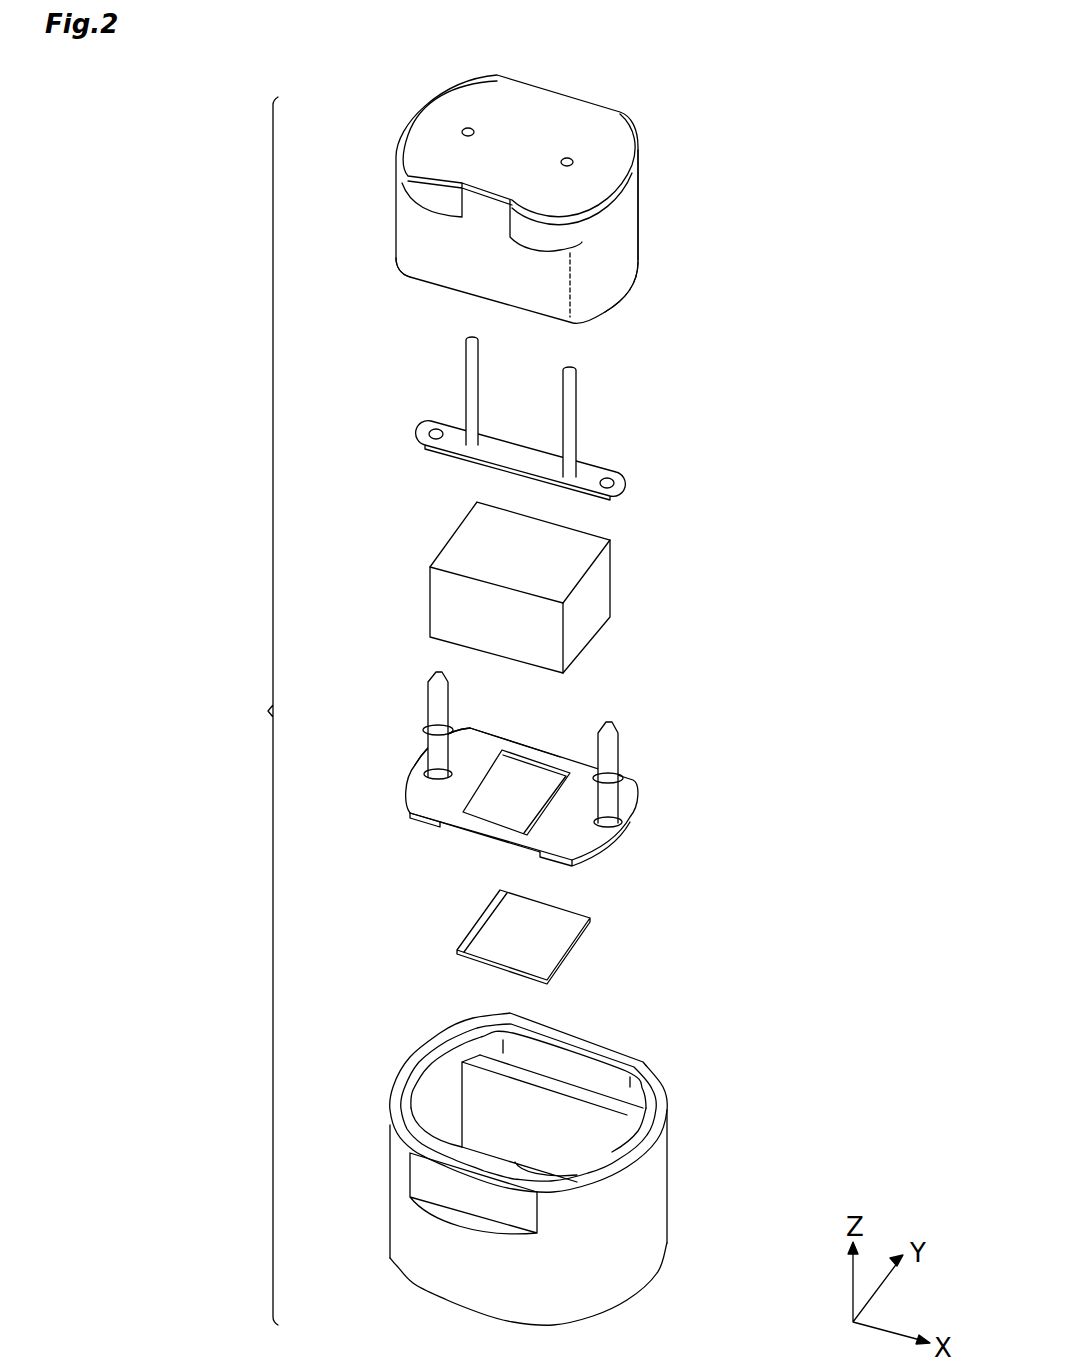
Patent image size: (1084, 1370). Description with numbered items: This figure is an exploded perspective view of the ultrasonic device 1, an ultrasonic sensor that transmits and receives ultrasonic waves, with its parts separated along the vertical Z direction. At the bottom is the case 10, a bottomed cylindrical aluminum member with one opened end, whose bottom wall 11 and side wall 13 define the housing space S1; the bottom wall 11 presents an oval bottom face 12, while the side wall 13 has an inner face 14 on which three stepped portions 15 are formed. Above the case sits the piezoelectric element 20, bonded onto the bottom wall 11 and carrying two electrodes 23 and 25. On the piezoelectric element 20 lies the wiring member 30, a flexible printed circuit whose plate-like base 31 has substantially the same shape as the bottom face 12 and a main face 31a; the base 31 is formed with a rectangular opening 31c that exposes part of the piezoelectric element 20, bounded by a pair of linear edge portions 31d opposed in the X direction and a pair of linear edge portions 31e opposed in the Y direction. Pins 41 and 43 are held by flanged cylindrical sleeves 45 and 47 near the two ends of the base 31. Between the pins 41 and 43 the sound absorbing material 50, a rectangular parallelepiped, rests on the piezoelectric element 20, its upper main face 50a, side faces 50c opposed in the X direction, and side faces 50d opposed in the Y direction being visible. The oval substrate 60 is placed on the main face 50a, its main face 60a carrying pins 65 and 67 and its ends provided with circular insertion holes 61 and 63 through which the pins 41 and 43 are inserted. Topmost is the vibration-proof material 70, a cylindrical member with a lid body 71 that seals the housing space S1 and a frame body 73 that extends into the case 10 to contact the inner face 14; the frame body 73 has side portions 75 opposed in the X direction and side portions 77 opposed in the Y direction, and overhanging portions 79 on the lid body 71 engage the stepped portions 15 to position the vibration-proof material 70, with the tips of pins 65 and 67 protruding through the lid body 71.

The ultrasonic device 1 is at (260, 711).
The case 10 is at (546, 1148).
The bottom wall 11 is at (529, 1102).
The bottom face 12 is at (540, 1175).
The side wall 13 is at (648, 1235).
The inner face 14 is at (480, 1100).
The stepped portion 15 is at (585, 1090).
The housing space S1 is at (437, 1080).
The piezoelectric element 20 is at (533, 937).
The electrode 23 is at (467, 933).
The electrode 25 is at (560, 917).
The wiring member 30 is at (513, 788).
The base 31 is at (428, 812).
The main face 31a is at (423, 792).
The opening 31c is at (487, 777).
The edge portion 31d is at (482, 768).
The edge portion 31e is at (488, 828).
The pin 41 is at (428, 700).
The pin 43 is at (620, 748).
The sleeve 45 is at (425, 748).
The sleeve 47 is at (620, 800).
The sound absorbing material 50 is at (539, 587).
The main face 50a is at (477, 540).
The side face 50c is at (587, 610).
The side face 50d is at (455, 612).
The substrate 60 is at (542, 421).
The main face 60a is at (517, 443).
The insertion hole 61 is at (418, 438).
The insertion hole 63 is at (610, 468).
The pin 65 is at (465, 375).
The pin 67 is at (578, 403).
The vibration-proof material 70 is at (522, 185).
The lid body 71 is at (537, 107).
The frame body 73 is at (644, 229).
The side portion 75 is at (617, 273).
The side portion 77 is at (418, 253).
The overhanging portion 79 is at (418, 202).